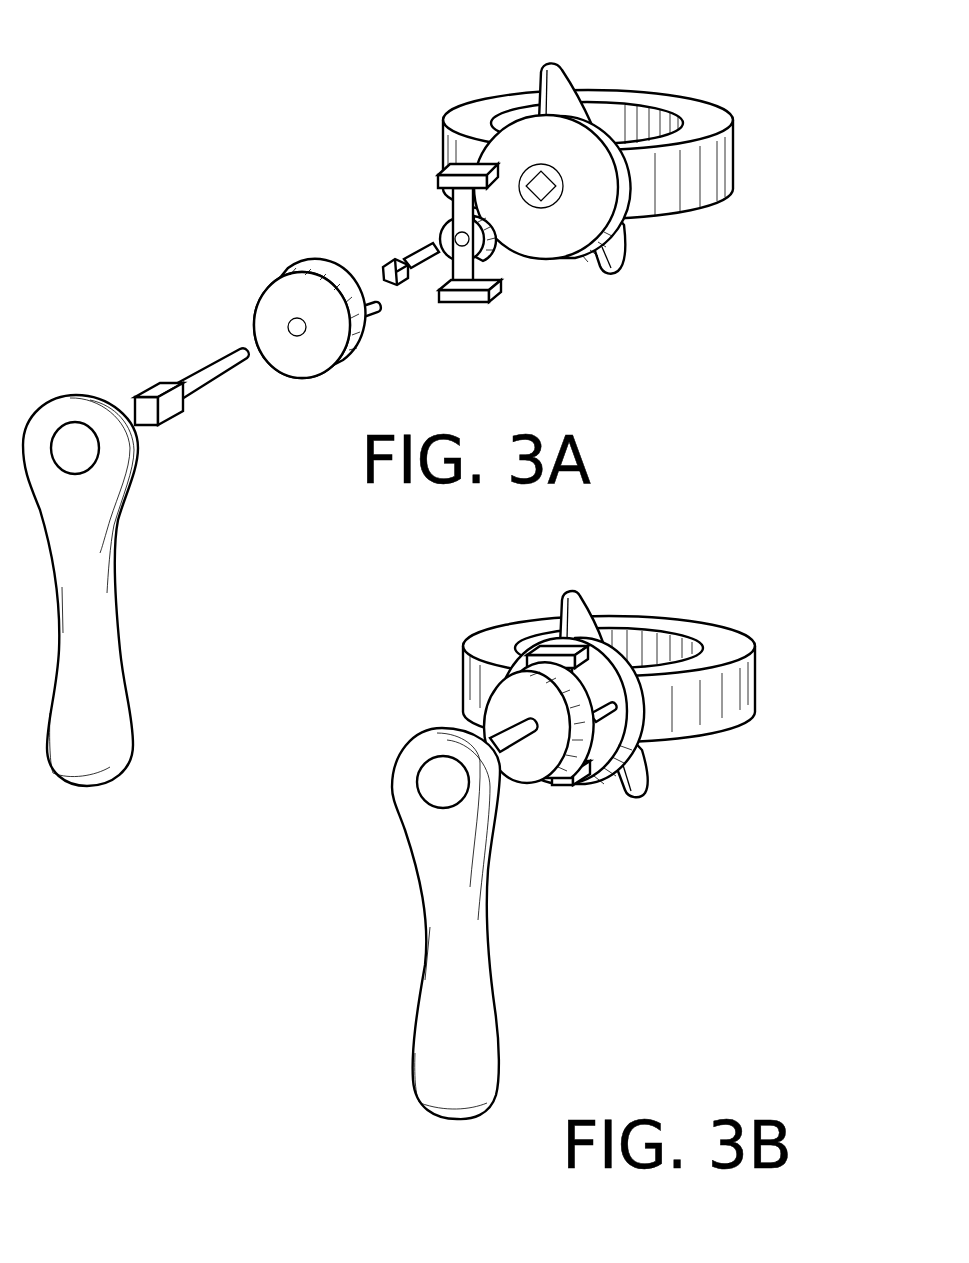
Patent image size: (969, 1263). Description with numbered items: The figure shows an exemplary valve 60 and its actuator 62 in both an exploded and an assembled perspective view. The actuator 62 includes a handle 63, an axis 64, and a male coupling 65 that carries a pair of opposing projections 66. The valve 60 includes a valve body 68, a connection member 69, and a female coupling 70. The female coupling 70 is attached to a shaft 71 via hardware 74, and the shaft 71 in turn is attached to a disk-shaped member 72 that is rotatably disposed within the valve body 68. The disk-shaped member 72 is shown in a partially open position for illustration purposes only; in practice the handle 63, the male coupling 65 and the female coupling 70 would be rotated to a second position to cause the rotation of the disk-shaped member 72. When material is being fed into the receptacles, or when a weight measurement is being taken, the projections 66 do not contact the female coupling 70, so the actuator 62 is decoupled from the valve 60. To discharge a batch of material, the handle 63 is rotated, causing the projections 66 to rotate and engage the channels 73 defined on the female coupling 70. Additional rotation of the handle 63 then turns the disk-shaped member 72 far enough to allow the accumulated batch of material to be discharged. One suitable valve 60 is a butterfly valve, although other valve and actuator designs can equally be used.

In FIG. 3A, the valve 60 is at (420, 102).
In FIG. 3B, the valve 60 is at (780, 684).
In FIG. 3A, the actuator 62 is at (148, 333).
In FIG. 3B, the actuator 62 is at (375, 733).
In FIG. 3A, the handle 63 is at (122, 593).
In FIG. 3B, the handle 63 is at (430, 932).
In FIG. 3A, the axis 64 is at (208, 395).
In FIG. 3B, the axis 64 is at (517, 757).
In FIG. 3A, the male coupling 65 is at (342, 357).
In FIG. 3B, the male coupling 65 is at (539, 722).
In FIG. 3A, the opposing projections 66 is at (379, 309).
In FIG. 3B, the opposing projections 66 is at (603, 712).
In FIG. 3A, the valve body 68 is at (708, 120).
In FIG. 3B, the valve body 68 is at (718, 645).
In FIG. 3A, the connection member 69 is at (585, 262).
In FIG. 3B, the connection member 69 is at (648, 740).
In FIG. 3A, the female coupling 70 is at (480, 303).
In FIG. 3B, the female coupling 70 is at (558, 715).
In FIG. 3A, the shaft 71 is at (615, 203).
In FIG. 3B, the shaft 71 is at (571, 711).
In FIG. 3A, the disk-shaped member 72 is at (567, 73).
In FIG. 3B, the disk-shaped member 72 is at (577, 610).
In FIG. 3A, the channels 73 is at (446, 205).
In FIG. 3A, the hardware 74 is at (410, 257).